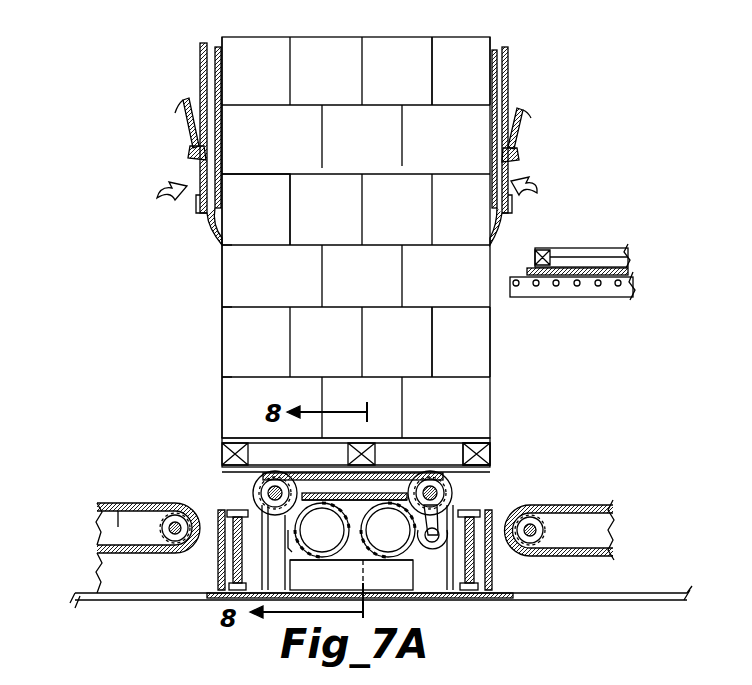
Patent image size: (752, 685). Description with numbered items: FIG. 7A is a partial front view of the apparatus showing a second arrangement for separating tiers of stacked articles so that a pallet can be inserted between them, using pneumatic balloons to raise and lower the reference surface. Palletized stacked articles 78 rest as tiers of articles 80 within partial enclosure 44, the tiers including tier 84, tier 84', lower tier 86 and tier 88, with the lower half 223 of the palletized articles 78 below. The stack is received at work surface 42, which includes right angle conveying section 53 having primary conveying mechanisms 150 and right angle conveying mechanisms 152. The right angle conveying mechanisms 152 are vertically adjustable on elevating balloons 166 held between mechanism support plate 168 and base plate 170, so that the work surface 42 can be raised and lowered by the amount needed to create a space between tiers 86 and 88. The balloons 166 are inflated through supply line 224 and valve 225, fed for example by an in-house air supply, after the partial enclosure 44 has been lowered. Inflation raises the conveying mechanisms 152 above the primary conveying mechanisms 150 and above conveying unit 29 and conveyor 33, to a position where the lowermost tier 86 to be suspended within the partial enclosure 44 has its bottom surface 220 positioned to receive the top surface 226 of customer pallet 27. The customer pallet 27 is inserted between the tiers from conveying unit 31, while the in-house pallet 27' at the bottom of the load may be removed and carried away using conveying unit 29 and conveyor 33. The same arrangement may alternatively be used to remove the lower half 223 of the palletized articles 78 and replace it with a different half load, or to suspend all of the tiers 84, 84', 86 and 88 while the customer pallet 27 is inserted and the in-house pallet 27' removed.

The partial enclosure 44 is at (542, 65).
The articles 80 is at (390, 197).
The tier 84 is at (462, 66).
The tier 84' is at (490, 344).
The in-house pallet 27' is at (508, 418).
The lower tier 86 is at (250, 210).
The bottom surface 220 is at (225, 248).
The tier 88 is at (228, 273).
The palletized articles 78 is at (163, 338).
The lower half 223 is at (238, 362).
The right angle conveying mechanisms 152 is at (262, 480).
The work surface 42 is at (450, 488).
The right angle conveying section 53 is at (458, 508).
The elevating balloons 166 is at (293, 525).
The mechanism support plate 168 is at (362, 494).
The base plate 170 is at (397, 578).
The valve 225 is at (351, 575).
The primary conveying mechanisms 150 is at (280, 565).
The supply line 224 is at (217, 590).
The conveying unit 29 is at (120, 503).
The conveyor 33 is at (583, 527).
The top surface 226 is at (578, 250).
The customer pallet 27 is at (602, 255).
The conveying unit 31 is at (613, 298).